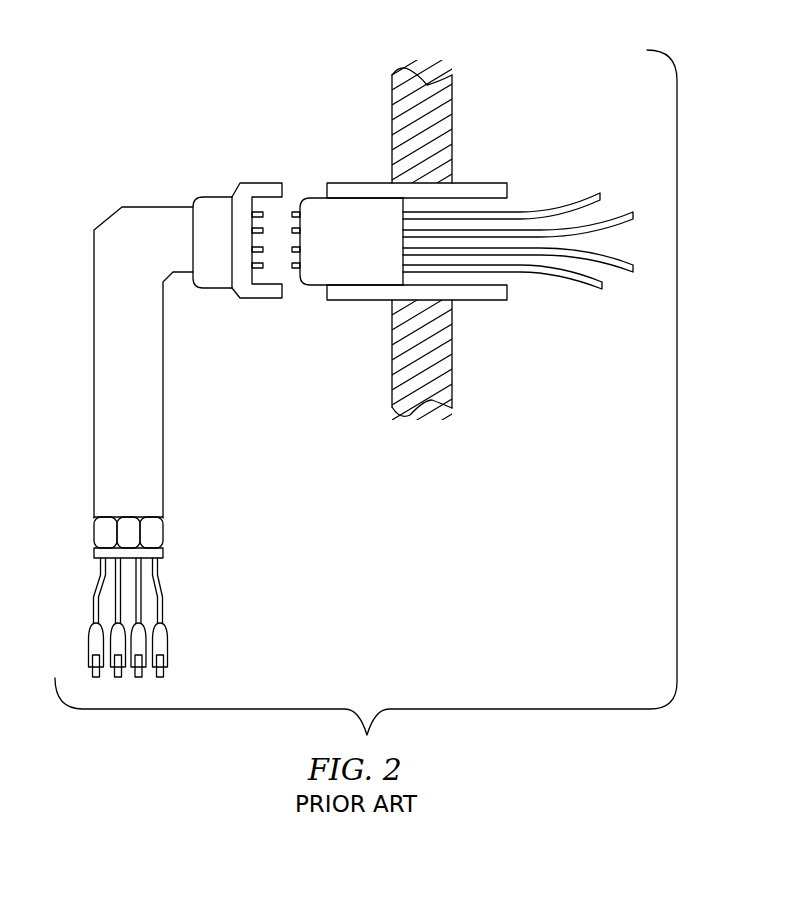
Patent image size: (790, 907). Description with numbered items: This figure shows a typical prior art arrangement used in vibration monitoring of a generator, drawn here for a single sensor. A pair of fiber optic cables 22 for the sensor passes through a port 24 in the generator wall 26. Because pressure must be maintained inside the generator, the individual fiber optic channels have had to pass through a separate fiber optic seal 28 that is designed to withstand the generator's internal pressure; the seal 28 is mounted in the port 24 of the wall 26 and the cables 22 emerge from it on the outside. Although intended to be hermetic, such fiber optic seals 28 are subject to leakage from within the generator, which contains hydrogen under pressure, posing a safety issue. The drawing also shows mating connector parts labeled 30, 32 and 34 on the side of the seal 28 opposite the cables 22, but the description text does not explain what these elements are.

The wires 22 is at (560, 258).
The receptacle connector 24 is at (358, 198).
The wall / panel 26 is at (453, 110).
The receptacle housing 28 is at (362, 265).
The contact pins 30 is at (293, 213).
The plug connector 32 is at (263, 193).
The cable plug body 34 is at (157, 218).